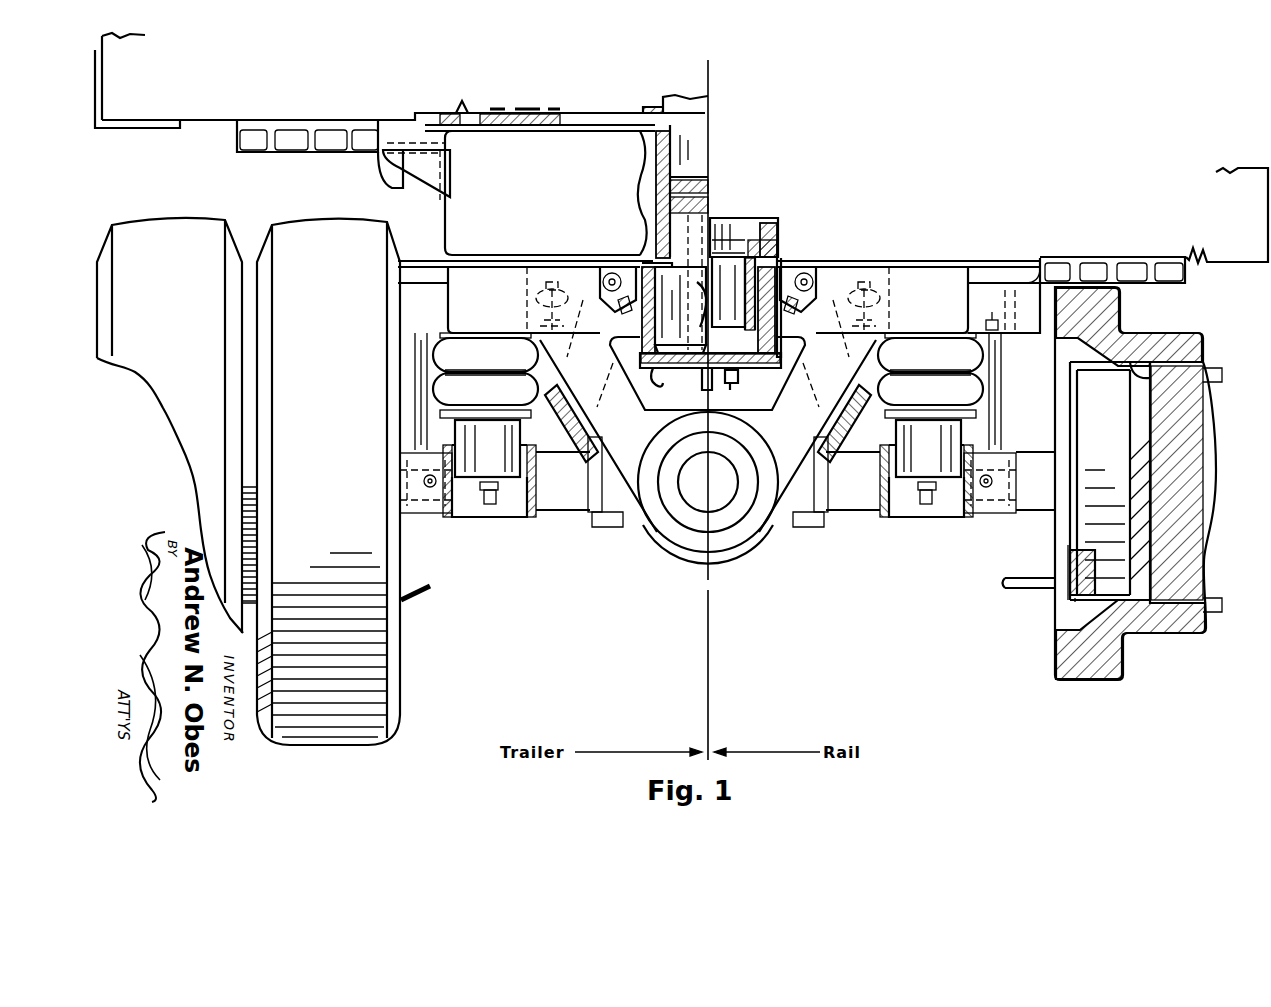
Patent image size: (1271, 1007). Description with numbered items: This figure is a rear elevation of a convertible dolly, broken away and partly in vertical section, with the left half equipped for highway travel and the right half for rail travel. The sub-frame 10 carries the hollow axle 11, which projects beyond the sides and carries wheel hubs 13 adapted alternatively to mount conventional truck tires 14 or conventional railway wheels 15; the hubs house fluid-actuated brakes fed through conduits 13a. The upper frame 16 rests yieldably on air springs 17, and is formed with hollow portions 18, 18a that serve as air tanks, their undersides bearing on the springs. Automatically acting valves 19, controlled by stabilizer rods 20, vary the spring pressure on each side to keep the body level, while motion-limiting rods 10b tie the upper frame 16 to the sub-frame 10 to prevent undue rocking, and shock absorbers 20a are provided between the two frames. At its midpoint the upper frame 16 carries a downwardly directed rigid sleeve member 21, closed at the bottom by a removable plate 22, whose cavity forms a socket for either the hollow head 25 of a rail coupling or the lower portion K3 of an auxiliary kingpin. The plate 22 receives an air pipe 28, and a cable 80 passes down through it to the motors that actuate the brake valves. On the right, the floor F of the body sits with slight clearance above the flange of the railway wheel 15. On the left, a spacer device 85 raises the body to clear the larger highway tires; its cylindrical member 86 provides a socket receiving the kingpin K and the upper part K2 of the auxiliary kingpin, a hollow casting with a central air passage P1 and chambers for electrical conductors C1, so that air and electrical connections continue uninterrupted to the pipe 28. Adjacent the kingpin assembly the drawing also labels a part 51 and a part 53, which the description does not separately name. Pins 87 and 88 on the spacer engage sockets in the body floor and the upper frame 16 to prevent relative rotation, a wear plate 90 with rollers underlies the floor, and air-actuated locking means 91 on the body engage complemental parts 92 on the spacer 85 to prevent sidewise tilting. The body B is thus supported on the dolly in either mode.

The sub-frame 10 is at (795, 507).
The motion-limiting rods 10b is at (418, 373).
The front axle 11 is at (1033, 463).
The wheel hubs 13 is at (1110, 388).
The conduits 13a is at (416, 588).
The truck tires 14 is at (287, 227).
The railway wheels 15 is at (1062, 655).
The upper frame 16 is at (988, 297).
The air springs 17 is at (471, 355).
The hollow portion 18 is at (471, 273).
The air tank 18a is at (912, 277).
The automatically acting valves 19 is at (535, 345).
The stabilizer rods 20 is at (867, 377).
The shock absorbers 20a is at (826, 392).
The sleeve member 21 is at (624, 263).
The removable plate 22 is at (703, 387).
The hollow head 25 is at (740, 364).
The air pipe 28 is at (705, 388).
The kingpin sleeve 51 is at (702, 136).
The flange 53 is at (720, 242).
The cable 80 is at (737, 392).
The spacer device 85 is at (591, 150).
The cylindrical member 86 is at (658, 158).
The pin 87 is at (464, 110).
The pin 88 is at (539, 256).
The wear plate 90 is at (545, 112).
The locking means 91 is at (362, 184).
The complemental parts 92 is at (434, 177).
The trailer body B is at (202, 107).
The electrical conductors C1 is at (697, 306).
The floor F is at (335, 127).
The kingpin K is at (703, 107).
The auxiliary kingpin upper part K2 is at (702, 208).
The auxiliary kingpin lower portion K3 is at (654, 256).
The central air passage P1 is at (700, 305).